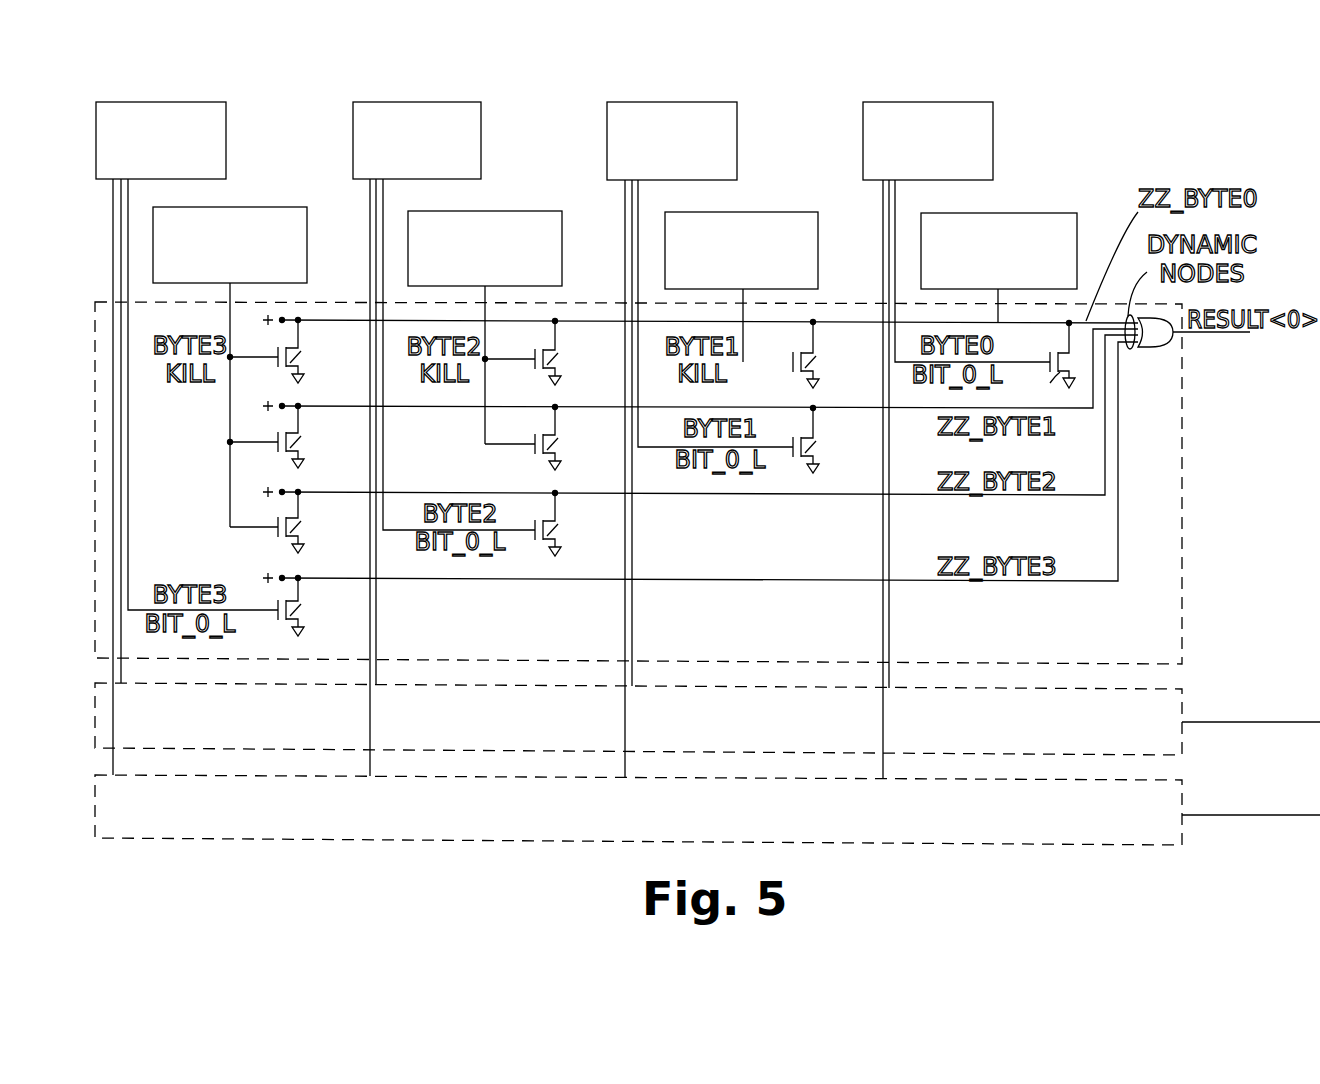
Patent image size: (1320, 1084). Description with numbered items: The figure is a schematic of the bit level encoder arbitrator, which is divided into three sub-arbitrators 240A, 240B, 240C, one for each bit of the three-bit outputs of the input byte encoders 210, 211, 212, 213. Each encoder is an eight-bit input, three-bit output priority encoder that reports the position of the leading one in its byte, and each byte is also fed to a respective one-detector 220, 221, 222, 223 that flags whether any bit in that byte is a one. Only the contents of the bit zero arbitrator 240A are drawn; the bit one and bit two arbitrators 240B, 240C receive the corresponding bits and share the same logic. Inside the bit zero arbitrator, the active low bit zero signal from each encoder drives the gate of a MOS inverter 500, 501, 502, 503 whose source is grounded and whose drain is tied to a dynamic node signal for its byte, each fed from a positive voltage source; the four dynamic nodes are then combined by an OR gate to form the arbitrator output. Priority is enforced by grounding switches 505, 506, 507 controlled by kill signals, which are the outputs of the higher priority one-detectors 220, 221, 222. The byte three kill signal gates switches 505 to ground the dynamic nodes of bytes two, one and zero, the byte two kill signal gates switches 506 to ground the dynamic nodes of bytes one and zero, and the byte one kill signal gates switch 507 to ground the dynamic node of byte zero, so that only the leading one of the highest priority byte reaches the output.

The input byte encoder 210 is at (226, 141).
The input byte encoder 211 is at (481, 141).
The input byte encoder 212 is at (737, 141).
The input byte encoder 213 is at (993, 141).
The 1-detector 220 is at (307, 247).
The 1-detector 221 is at (562, 251).
The 1-detector 222 is at (818, 253).
The 1-detector 223 is at (1040, 213).
The sub-arbitrator 240A is at (1182, 618).
The sub-arbitrator 240B is at (1182, 688).
The sub-arbitrator 240C is at (1182, 779).
The MOS inverter 500 is at (317, 606).
The MOS inverter 501 is at (574, 524).
The MOS inverter 502 is at (832, 440).
The MOS inverter 503 is at (1043, 366).
The grounding switches 505 is at (292, 436).
The grounding switches 506 is at (548, 395).
The grounding switch 507 is at (832, 354).